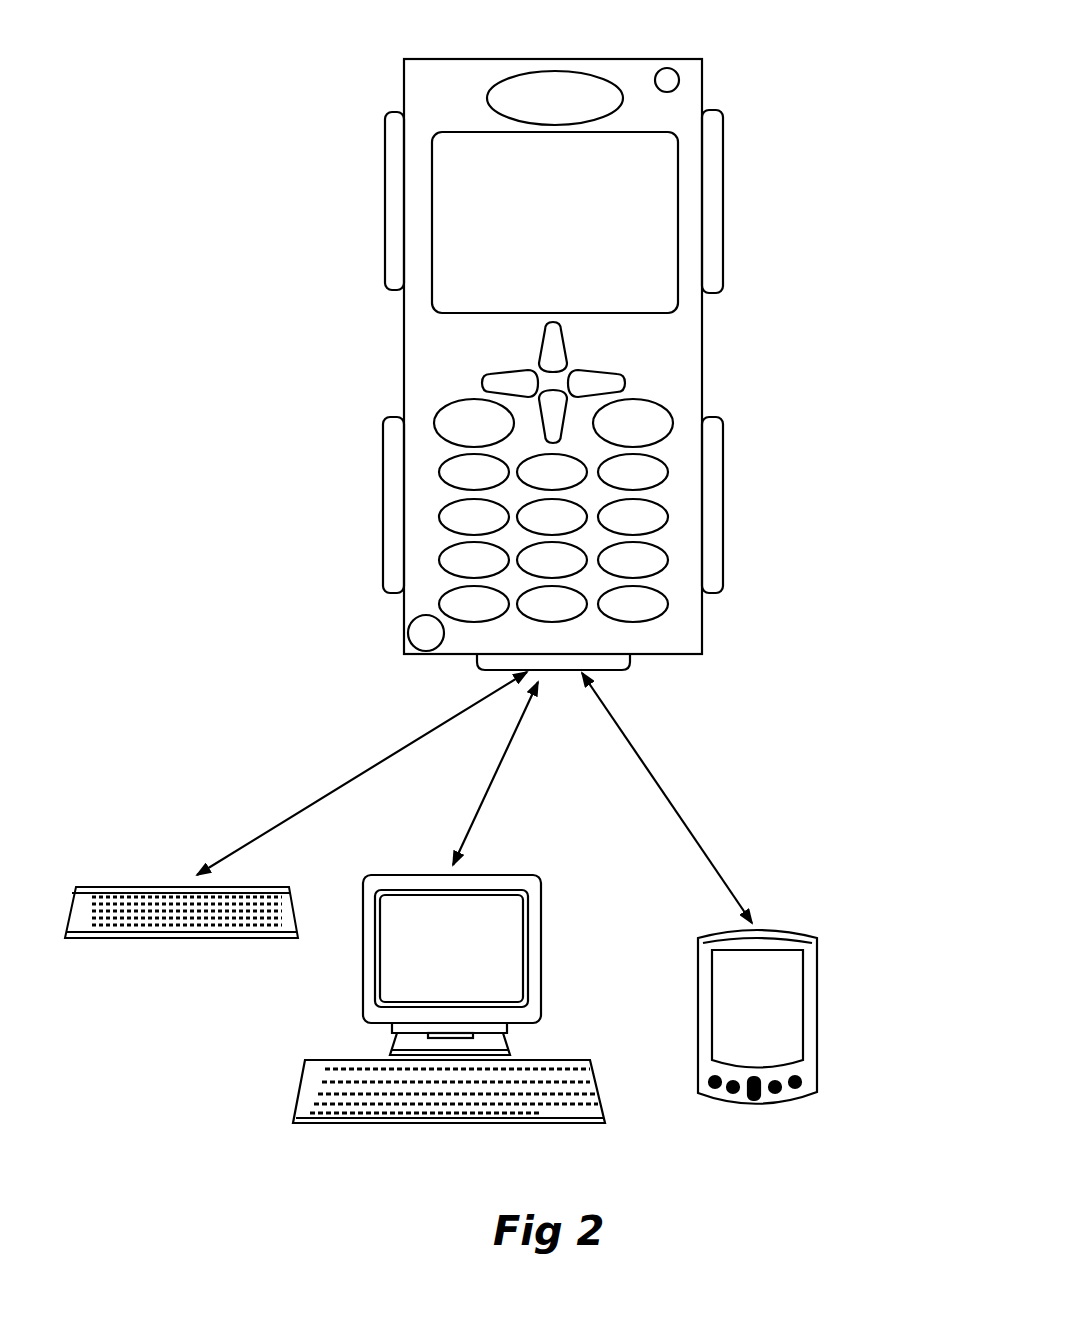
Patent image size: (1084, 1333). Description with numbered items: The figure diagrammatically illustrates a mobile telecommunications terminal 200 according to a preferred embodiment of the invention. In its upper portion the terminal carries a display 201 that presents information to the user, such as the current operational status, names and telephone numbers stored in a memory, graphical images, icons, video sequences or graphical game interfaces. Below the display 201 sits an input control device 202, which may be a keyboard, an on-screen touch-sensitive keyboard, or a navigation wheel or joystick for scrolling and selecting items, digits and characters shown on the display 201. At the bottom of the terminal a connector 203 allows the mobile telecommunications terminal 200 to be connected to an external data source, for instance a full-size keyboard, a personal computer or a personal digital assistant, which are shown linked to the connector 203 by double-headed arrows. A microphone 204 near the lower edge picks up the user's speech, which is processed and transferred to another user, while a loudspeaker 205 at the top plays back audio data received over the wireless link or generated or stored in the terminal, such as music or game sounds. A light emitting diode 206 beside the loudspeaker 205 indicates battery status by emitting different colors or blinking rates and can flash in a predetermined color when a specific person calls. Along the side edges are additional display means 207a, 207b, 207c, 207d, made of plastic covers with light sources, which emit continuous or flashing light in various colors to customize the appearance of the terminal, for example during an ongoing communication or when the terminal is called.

The mobile telecommunications terminal 200 is at (423, 70).
The display 201 is at (452, 295).
The input control device 202 is at (513, 586).
The connector 203 is at (548, 670).
The microphone 204 is at (423, 636).
The loudspeaker 205 is at (543, 88).
The light emitting diode 206 is at (668, 80).
The additional display means 207a is at (713, 188).
The additional display means 207b is at (710, 448).
The additional display means 207c is at (393, 453).
The additional display means 207d is at (393, 157).